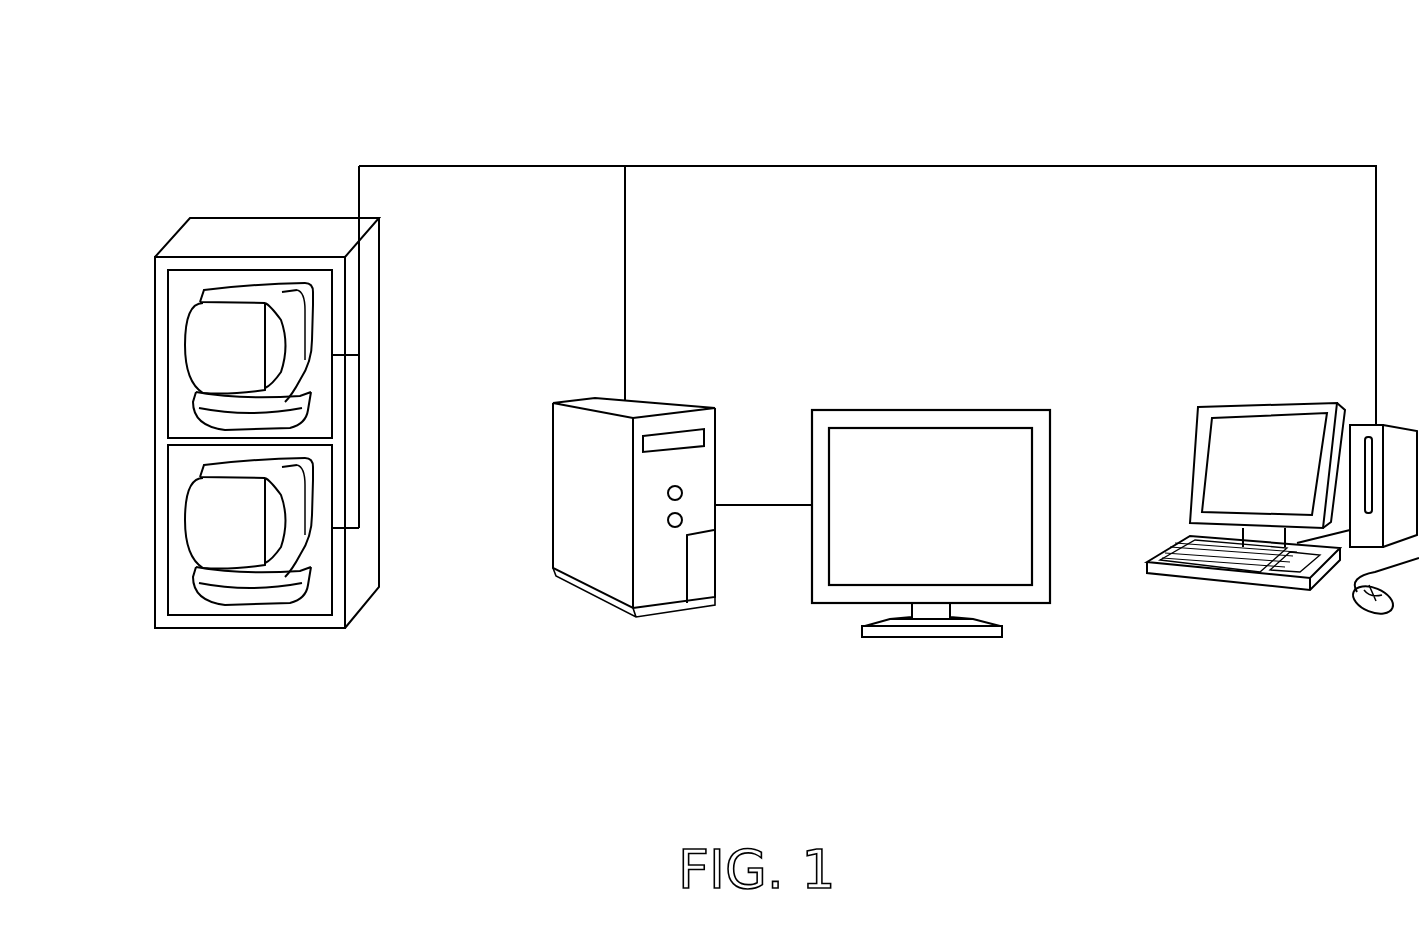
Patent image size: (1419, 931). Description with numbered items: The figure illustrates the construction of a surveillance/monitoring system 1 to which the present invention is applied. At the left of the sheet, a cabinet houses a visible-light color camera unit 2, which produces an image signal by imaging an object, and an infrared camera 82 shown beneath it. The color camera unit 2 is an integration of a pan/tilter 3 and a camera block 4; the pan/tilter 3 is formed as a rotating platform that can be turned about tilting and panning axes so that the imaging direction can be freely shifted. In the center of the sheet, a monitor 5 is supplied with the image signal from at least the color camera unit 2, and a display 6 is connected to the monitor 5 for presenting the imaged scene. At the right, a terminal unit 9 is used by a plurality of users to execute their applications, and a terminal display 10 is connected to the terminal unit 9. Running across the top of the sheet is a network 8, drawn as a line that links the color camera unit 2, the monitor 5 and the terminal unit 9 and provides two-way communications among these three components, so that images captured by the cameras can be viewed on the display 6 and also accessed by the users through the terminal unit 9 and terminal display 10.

The surveillance/monitoring system 1 is at (993, 82).
The visible-light color camera unit 2 is at (188, 287).
The pan/tilter 3 is at (200, 422).
The camera block 4 is at (198, 350).
The monitor 5 is at (676, 403).
The display 6 is at (925, 410).
The network 8 is at (1197, 166).
The terminal unit 9 is at (1405, 425).
The terminal display 10 is at (1237, 578).
The infrared camera 82 is at (197, 525).